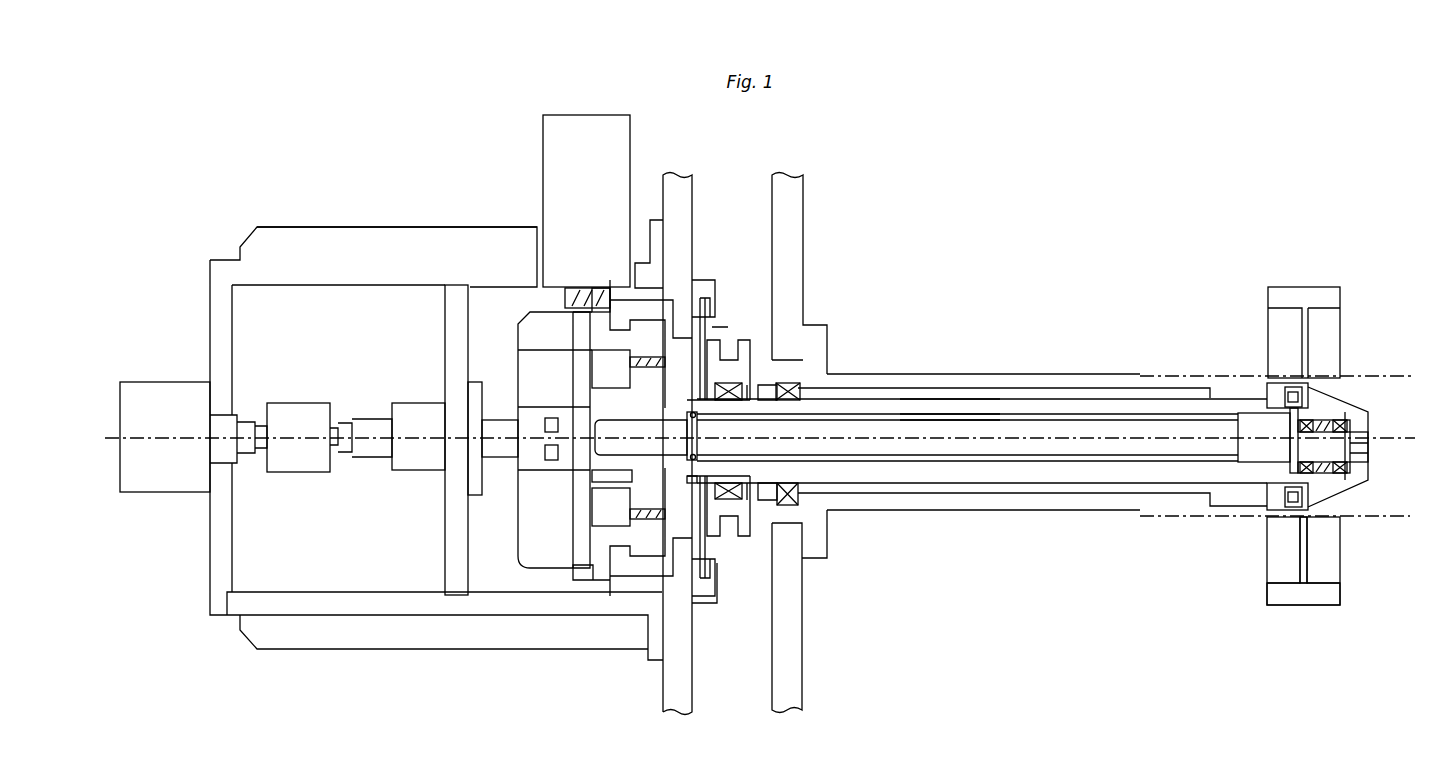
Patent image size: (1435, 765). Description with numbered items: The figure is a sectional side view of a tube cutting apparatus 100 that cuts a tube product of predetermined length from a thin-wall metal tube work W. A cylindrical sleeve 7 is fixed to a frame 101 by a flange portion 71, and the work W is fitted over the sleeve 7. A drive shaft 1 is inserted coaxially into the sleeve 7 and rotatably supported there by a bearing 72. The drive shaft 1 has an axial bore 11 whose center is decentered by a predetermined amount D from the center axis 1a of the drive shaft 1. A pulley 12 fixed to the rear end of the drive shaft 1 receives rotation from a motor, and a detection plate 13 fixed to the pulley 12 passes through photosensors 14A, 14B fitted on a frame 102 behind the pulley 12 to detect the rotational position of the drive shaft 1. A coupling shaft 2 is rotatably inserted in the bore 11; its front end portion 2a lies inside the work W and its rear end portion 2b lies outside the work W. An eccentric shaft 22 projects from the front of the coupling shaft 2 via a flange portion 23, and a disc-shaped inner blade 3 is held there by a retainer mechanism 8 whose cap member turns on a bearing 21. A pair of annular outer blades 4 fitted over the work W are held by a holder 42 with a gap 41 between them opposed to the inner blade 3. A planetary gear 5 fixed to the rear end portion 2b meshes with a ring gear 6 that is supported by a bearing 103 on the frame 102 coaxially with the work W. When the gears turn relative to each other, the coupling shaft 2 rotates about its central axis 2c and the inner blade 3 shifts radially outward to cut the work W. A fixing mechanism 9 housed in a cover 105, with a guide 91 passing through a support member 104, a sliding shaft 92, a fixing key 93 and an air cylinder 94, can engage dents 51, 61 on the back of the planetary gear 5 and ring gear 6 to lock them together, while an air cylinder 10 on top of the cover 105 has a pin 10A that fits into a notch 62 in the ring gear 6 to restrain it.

The tube cutting apparatus 100 is at (1203, 187).
The drive shaft 1 is at (972, 470).
The center axis of the drive shaft 1a is at (1125, 520).
The coupling shaft 2 is at (1062, 462).
The front end portion of the coupling shaft 2a is at (1287, 452).
The rear end portion of the coupling shaft 2b is at (745, 495).
The central axis of the coupling shaft 2c is at (942, 428).
The inner blade 3 is at (1308, 497).
The outer blade 4 is at (1270, 577).
The gap 41 is at (1307, 550).
The holder 42 is at (1303, 593).
The planetary gear 5 is at (586, 508).
The dent 51 is at (643, 470).
The ring gear 6 is at (657, 548).
The sleeve 7 is at (1003, 388).
The flange portion 71 is at (828, 330).
The bearing 72 is at (805, 510).
The retainer mechanism 8 is at (1358, 421).
The fixing mechanism 9 is at (234, 340).
The guide 91 is at (481, 385).
The shaft 92 is at (412, 404).
The fixing key 93 is at (520, 523).
The air cylinder 94 is at (157, 382).
The air cylinder 10 is at (632, 116).
The pin 10A is at (607, 298).
The bore 11 is at (1150, 416).
The pulley 12 is at (757, 530).
The detection plate 13 is at (716, 328).
The photosensor 14A is at (716, 283).
The photosensor 14B is at (707, 600).
The bearing 21 is at (1345, 470).
The eccentric shaft 22 is at (1348, 435).
The flange portion 23 is at (1288, 418).
The dent 61 is at (578, 333).
The notch 62 is at (580, 290).
The frame 101 is at (804, 236).
The frame 102 is at (693, 200).
The bearing 103 is at (630, 576).
The support member 104 is at (445, 336).
The cover 105 is at (323, 256).
The work W is at (1097, 373).
The decentering amount D is at (908, 404).